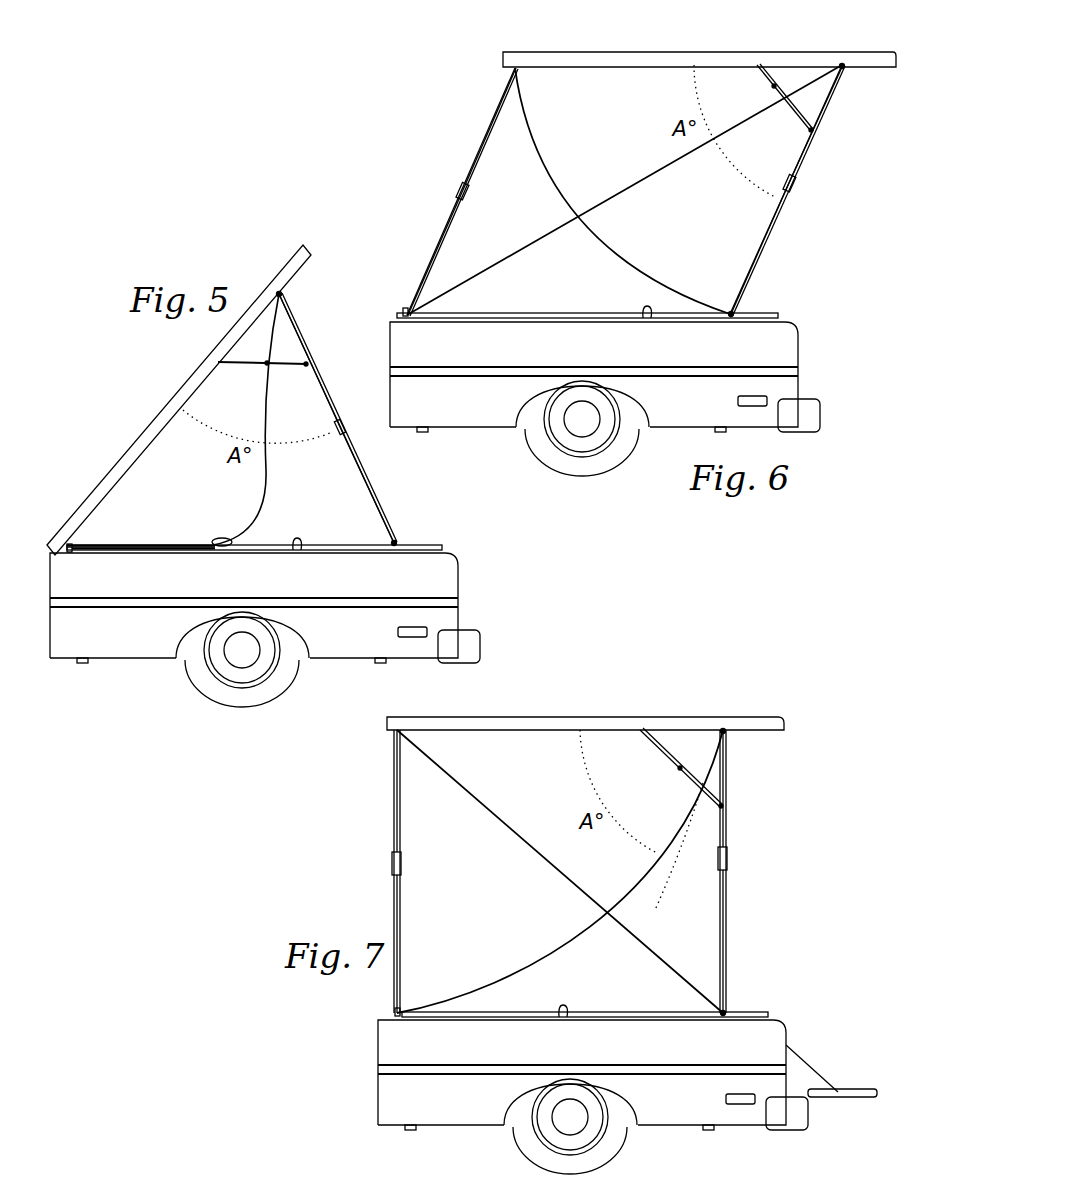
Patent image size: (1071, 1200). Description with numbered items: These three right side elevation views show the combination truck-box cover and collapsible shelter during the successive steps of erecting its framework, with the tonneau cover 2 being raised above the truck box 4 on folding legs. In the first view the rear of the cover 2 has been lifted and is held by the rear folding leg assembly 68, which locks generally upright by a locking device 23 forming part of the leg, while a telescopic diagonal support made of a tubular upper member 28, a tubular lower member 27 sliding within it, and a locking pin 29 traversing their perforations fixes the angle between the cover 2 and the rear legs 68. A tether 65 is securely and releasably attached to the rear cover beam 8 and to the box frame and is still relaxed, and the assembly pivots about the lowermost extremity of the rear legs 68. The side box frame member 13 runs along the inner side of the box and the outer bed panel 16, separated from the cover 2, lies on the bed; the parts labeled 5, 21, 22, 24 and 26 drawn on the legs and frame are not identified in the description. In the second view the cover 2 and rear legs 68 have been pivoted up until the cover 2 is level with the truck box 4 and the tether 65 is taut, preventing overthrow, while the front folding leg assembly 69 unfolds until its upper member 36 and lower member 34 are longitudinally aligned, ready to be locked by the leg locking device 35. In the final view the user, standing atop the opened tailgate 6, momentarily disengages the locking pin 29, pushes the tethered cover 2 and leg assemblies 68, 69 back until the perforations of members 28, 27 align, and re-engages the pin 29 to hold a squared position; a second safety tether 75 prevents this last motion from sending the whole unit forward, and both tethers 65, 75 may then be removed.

In FIG. 5, the tonneau cover 2 is at (266, 290).
In FIG. 6, the tonneau cover 2 is at (710, 60).
In FIG. 7, the tonneau cover 2 is at (585, 697).
In FIG. 5, the truck box 4 is at (469, 588).
In FIG. 6, the truck box 4 is at (805, 352).
In FIG. 7, the truck box 4 is at (593, 1097).
In FIG. 5, the front pivot 5 is at (78, 556).
In FIG. 6, the front pivot 5 is at (405, 311).
In FIG. 7, the front pivot 5 is at (400, 1020).
In FIG. 7, the tailgate 6 is at (842, 1088).
In FIG. 5, the rear cover beam 8 is at (279, 294).
In FIG. 6, the rear cover beam 8 is at (848, 68).
In FIG. 7, the rear cover beam 8 is at (730, 736).
In FIG. 5, the side box frame member 13 is at (425, 546).
In FIG. 6, the side box frame member 13 is at (765, 313).
In FIG. 7, the side box frame member 13 is at (762, 1012).
In FIG. 5, the outer bed panel 16 is at (297, 551).
In FIG. 6, the outer bed panel 16 is at (648, 320).
In FIG. 7, the outer bed panel 16 is at (560, 1018).
In FIG. 5, the lower rear pivot 21 is at (397, 540).
In FIG. 6, the lower rear pivot 21 is at (726, 310).
In FIG. 7, the lower rear pivot 21 is at (728, 1008).
In FIG. 5, the lower section of rear support 22 is at (362, 487).
In FIG. 6, the lower section of rear support 22 is at (763, 258).
In FIG. 7, the lower section of rear support 22 is at (727, 937).
In FIG. 5, the locking device 23 is at (338, 424).
In FIG. 6, the locking device 23 is at (794, 190).
In FIG. 7, the locking device 23 is at (729, 862).
In FIG. 5, the middle section of rear support 24 is at (323, 410).
In FIG. 6, the middle section of rear support 24 is at (800, 165).
In FIG. 7, the middle section of rear support 24 is at (728, 840).
In FIG. 5, the upper section of rear support 26 is at (300, 345).
In FIG. 6, the upper section of rear support 26 is at (822, 108).
In FIG. 7, the upper section of rear support 26 is at (727, 785).
In FIG. 5, the lower member 27 is at (305, 366).
In FIG. 6, the lower member 27 is at (791, 137).
In FIG. 7, the lower member 27 is at (718, 810).
In FIG. 5, the upper member 28 is at (220, 364).
In FIG. 6, the upper member 28 is at (755, 72).
In FIG. 7, the upper member 28 is at (648, 738).
In FIG. 5, the locking pin 29 is at (267, 370).
In FIG. 6, the locking pin 29 is at (774, 90).
In FIG. 7, the locking pin 29 is at (678, 770).
In FIG. 5, the lower member 34 is at (120, 543).
In FIG. 6, the lower member 34 is at (447, 225).
In FIG. 7, the lower member 34 is at (401, 965).
In FIG. 5, the leg locking device 35 is at (218, 540).
In FIG. 6, the leg locking device 35 is at (466, 186).
In FIG. 7, the leg locking device 35 is at (404, 860).
In FIG. 5, the upper member 36 is at (175, 545).
In FIG. 6, the upper member 36 is at (493, 120).
In FIG. 7, the upper member 36 is at (401, 810).
In FIG. 5, the tether 65 is at (265, 513).
In FIG. 6, the tether 65 is at (570, 225).
In FIG. 7, the tether 65 is at (597, 930).
In FIG. 5, the rear folding leg assembly 68 is at (368, 468).
In FIG. 6, the rear folding leg assembly 68 is at (745, 213).
In FIG. 7, the rear folding leg assembly 68 is at (710, 905).
In FIG. 5, the front folding leg assembly 69 is at (165, 525).
In FIG. 6, the front folding leg assembly 69 is at (483, 157).
In FIG. 7, the front folding leg assembly 69 is at (420, 920).
In FIG. 6, the second safety tether 75 is at (630, 263).
In FIG. 7, the second safety tether 75 is at (642, 948).